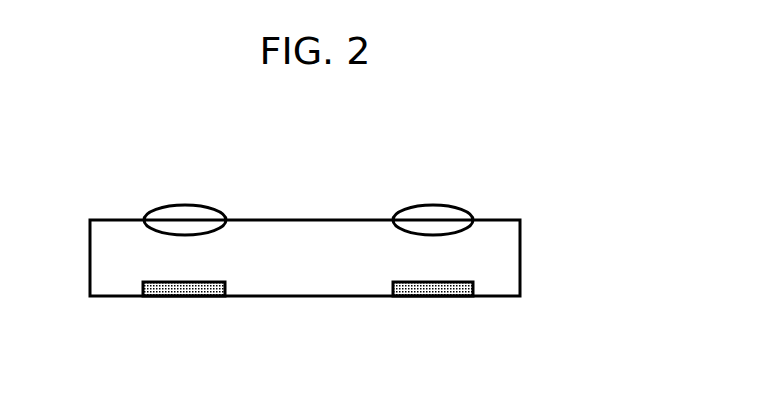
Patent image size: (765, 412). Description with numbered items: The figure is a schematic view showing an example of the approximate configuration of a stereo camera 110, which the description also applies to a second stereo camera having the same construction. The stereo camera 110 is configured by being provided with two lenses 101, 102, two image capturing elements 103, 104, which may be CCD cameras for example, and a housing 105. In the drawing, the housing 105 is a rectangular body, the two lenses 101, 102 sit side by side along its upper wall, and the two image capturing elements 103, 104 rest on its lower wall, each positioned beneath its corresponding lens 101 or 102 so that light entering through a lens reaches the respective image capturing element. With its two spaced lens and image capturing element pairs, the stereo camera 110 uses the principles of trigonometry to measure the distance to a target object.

The lens 101 is at (197, 204).
The lens 102 is at (445, 204).
The image capturing element 103 is at (183, 300).
The image capturing element 104 is at (435, 300).
The housing 105 is at (507, 257).
The stereo camera 110 is at (569, 195).